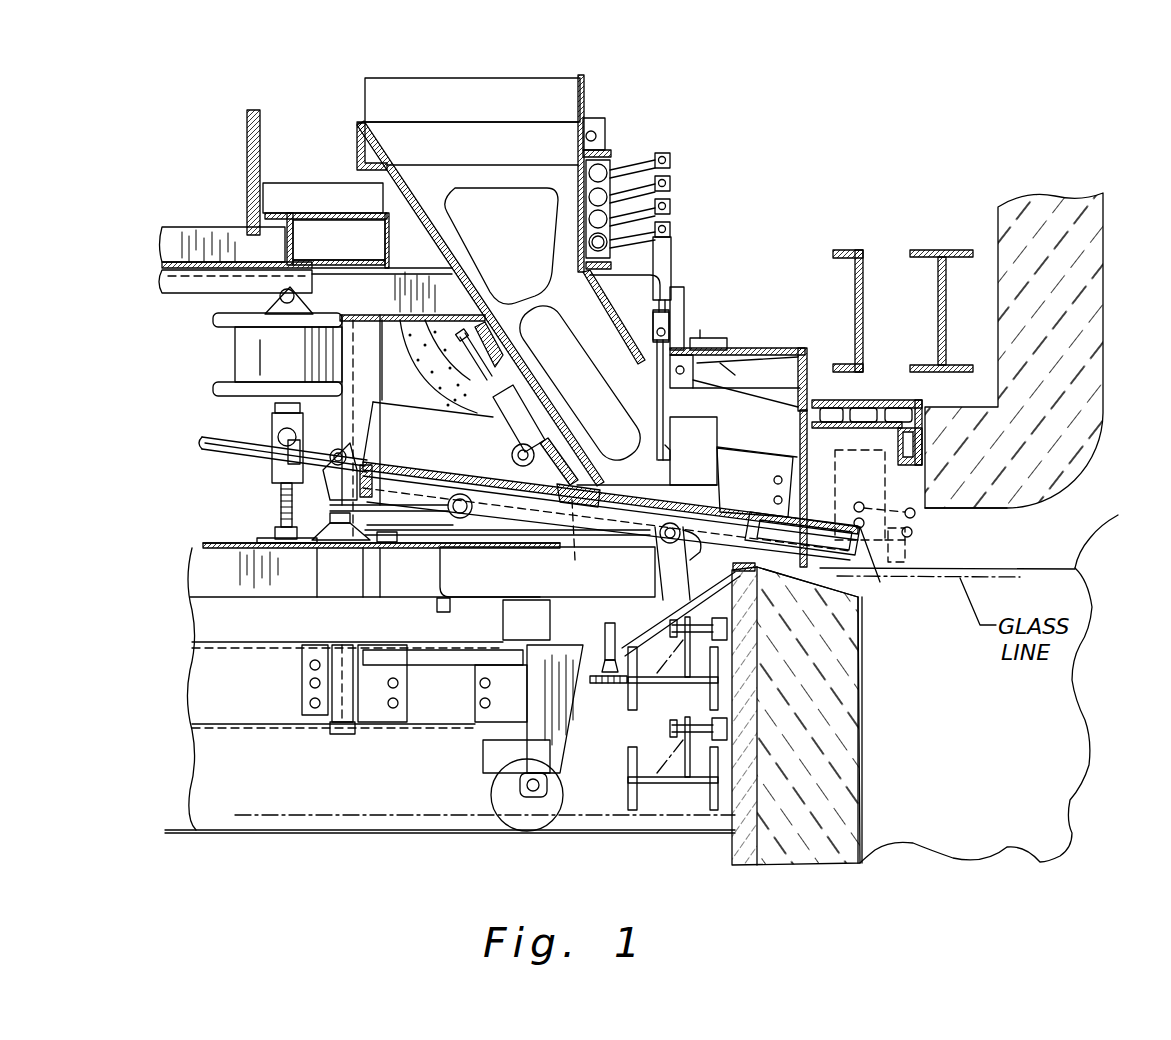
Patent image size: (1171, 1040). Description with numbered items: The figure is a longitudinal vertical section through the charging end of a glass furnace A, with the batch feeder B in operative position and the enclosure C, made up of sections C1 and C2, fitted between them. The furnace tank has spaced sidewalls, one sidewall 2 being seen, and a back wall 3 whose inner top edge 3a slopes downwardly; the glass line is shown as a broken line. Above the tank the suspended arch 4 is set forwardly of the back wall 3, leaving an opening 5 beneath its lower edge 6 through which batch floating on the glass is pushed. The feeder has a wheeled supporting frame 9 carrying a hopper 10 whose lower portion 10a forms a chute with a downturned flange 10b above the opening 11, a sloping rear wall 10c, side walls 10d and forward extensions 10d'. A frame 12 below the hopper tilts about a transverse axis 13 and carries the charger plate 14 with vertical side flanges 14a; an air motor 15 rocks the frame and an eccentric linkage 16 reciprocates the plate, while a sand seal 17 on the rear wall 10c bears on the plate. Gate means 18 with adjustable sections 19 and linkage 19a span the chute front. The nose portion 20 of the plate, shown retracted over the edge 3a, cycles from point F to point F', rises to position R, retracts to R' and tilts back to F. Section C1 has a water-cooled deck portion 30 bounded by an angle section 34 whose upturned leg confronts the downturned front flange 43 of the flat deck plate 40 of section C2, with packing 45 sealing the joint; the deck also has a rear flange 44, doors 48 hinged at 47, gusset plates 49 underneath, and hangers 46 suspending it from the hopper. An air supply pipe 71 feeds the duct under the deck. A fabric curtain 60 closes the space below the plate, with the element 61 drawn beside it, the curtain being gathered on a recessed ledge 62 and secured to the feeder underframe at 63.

The hopper 10 is at (405, 98).
The lower portion of hopper 10a is at (608, 325).
The downturned flange 10b is at (653, 401).
The sloping rear wall 10c is at (452, 260).
The side walls 10d is at (580, 383).
The forward extensions 10d' is at (693, 451).
The opening 11 is at (637, 484).
The frame 12 is at (493, 522).
The transverse axis 13 is at (578, 534).
The charger plate 14 is at (453, 467).
The vertical side flanges 14a is at (753, 463).
The air motor 15 is at (255, 358).
The motor driven eccentric linkage 16 is at (228, 450).
The sand seal 17 is at (559, 461).
The gate means 18 is at (655, 425).
The adjustable sections 19 is at (668, 453).
The linkage 19a is at (672, 160).
The nose portion 20 is at (855, 521).
The deck portion 30 is at (890, 427).
The structural angle section 34 is at (807, 432).
The flat deck plate 40 is at (722, 362).
The downturned front flange 43 is at (797, 378).
The downturned rear flange 44 is at (668, 396).
The heat-resistant packing 45 is at (808, 370).
The hangers 46 is at (684, 297).
The hinge 47 is at (703, 338).
The doors 48 is at (772, 350).
The gusset plates 49 is at (770, 397).
The fabric curtain 60 is at (757, 554).
The arm 61 is at (760, 533).
The recessed ledge 62 is at (796, 716).
The curtain fastening 63 is at (610, 623).
The air supply pipe 71 is at (658, 345).
The wheeled supporting frame 9 is at (246, 705).
The back wall 3 is at (862, 745).
The inner top edge 3a is at (832, 611).
The suspended arch 4 is at (1107, 330).
The opening 5 is at (1033, 528).
The lower edge 6 is at (957, 510).
The sidewall 2 is at (928, 589).
The charging end of glass furnace A is at (976, 715).
The batch feeder B is at (642, 146).
The enclosure C is at (812, 348).
The enclosure section C1 is at (889, 399).
The enclosure section C2 is at (749, 336).
The raised nose position R is at (906, 517).
The retracted nose position R' is at (860, 495).
The forward start position F is at (874, 564).
The forward end position F' is at (920, 544).